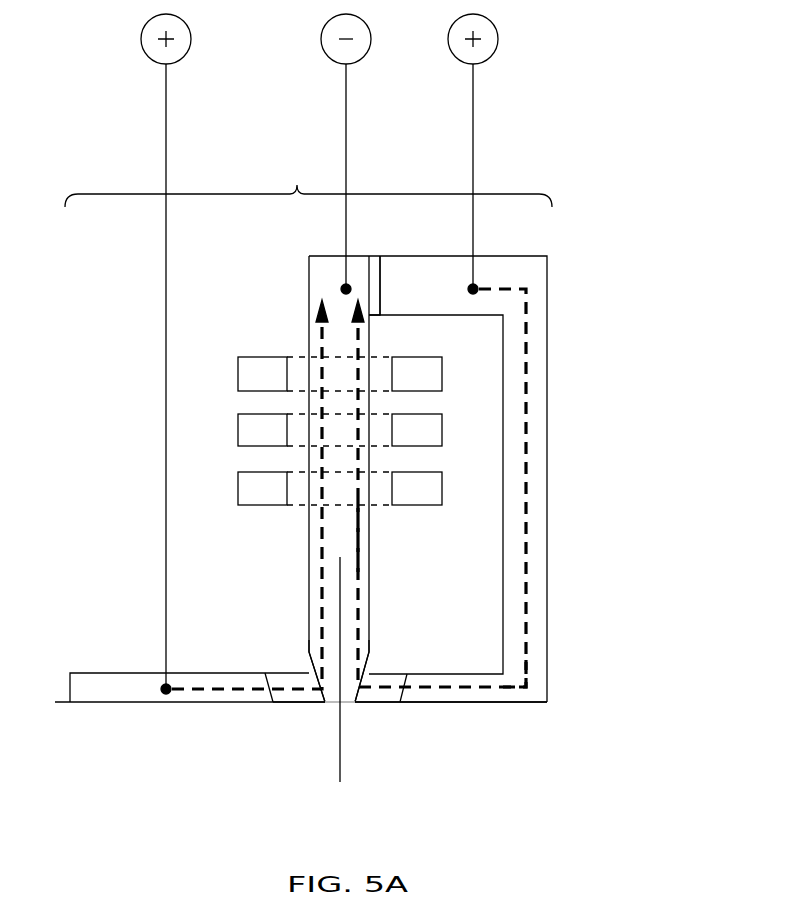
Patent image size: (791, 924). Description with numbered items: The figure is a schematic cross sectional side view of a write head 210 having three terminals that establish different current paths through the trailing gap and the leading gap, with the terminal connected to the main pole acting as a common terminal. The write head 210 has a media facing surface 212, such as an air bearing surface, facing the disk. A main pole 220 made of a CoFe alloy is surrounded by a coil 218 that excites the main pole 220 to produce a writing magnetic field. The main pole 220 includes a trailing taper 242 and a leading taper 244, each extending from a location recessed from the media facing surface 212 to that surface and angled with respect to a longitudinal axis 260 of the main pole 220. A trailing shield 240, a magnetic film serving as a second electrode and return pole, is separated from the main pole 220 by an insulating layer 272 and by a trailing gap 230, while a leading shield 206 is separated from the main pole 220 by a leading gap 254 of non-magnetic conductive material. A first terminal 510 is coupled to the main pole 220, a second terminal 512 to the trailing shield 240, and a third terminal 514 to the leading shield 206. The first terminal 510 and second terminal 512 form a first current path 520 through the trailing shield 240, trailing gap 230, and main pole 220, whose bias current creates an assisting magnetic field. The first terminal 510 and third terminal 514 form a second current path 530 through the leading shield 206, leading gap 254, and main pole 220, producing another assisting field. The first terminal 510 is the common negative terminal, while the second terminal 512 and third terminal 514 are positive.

The leading shield 206 is at (115, 702).
The write head 210 is at (308, 181).
The media facing surface 212 is at (427, 702).
The coil 218 is at (255, 505).
The main pole 220 is at (353, 540).
The trailing gap 230 is at (373, 705).
The trailing shield 240 is at (515, 690).
The trailing taper 242 is at (357, 655).
The leading taper 244 is at (310, 662).
The leading gap 254 is at (300, 695).
The longitudinal axis 260 is at (340, 770).
The insulating layer 272 is at (380, 285).
The first terminal 510 is at (347, 122).
The second terminal 512 is at (474, 127).
The third terminal 514 is at (166, 122).
The first current path 520 is at (526, 440).
The second current path 530 is at (322, 580).